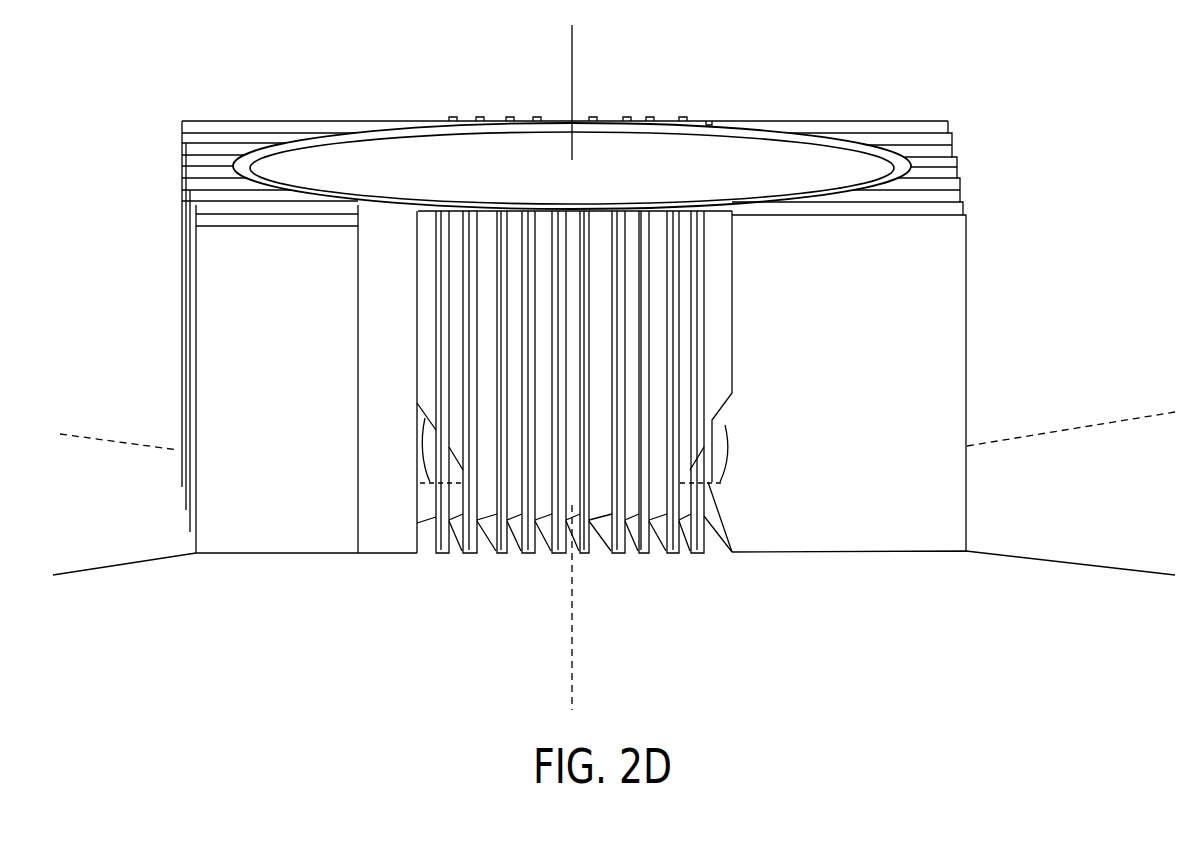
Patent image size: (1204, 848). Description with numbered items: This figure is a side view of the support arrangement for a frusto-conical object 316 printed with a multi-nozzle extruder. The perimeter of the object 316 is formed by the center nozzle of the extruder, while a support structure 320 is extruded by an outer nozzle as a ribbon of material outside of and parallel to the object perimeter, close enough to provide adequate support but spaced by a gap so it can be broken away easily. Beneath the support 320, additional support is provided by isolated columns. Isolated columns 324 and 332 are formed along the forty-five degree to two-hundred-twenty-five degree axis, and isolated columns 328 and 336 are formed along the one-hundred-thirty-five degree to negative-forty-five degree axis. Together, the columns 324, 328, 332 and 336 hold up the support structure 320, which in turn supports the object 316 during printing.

The frusto-conical object 316 is at (397, 162).
The support structure 320 is at (252, 160).
The isolated column 324 is at (122, 481).
The isolated column 328 is at (615, 563).
The isolated column 332 is at (973, 379).
The isolated column 336 is at (621, 108).